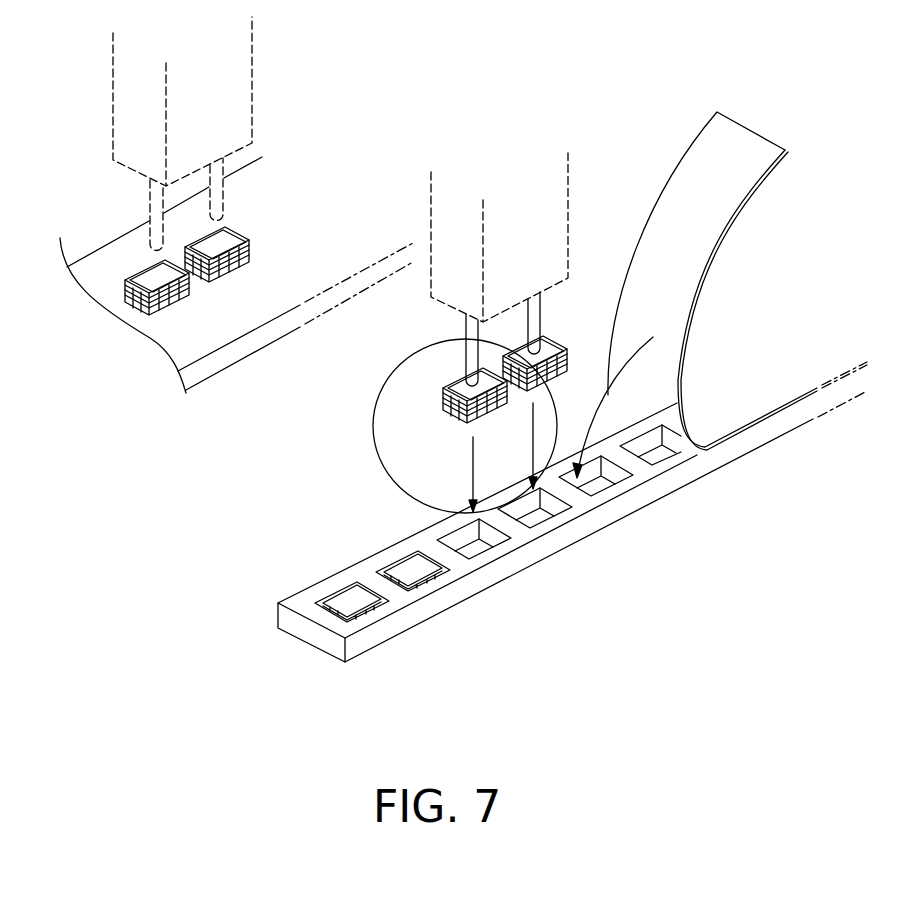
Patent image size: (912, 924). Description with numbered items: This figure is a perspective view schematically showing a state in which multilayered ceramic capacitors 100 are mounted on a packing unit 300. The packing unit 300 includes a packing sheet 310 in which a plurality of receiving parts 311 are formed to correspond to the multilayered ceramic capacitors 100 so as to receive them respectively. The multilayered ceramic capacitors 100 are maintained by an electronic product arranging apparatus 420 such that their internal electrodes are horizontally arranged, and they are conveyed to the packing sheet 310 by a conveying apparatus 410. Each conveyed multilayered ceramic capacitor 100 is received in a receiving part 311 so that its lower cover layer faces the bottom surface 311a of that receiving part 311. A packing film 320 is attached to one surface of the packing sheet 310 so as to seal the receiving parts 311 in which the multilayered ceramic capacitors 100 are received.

The multilayered ceramic capacitor 100 is at (228, 268).
The packing unit 300 is at (812, 296).
The packing sheet 310 is at (427, 611).
The receiving part 311 is at (472, 557).
The bottom surface 311a is at (535, 512).
The packing film 320 is at (742, 137).
The conveying apparatus 410 is at (240, 77).
The electronic product arranging apparatus 420 is at (115, 253).